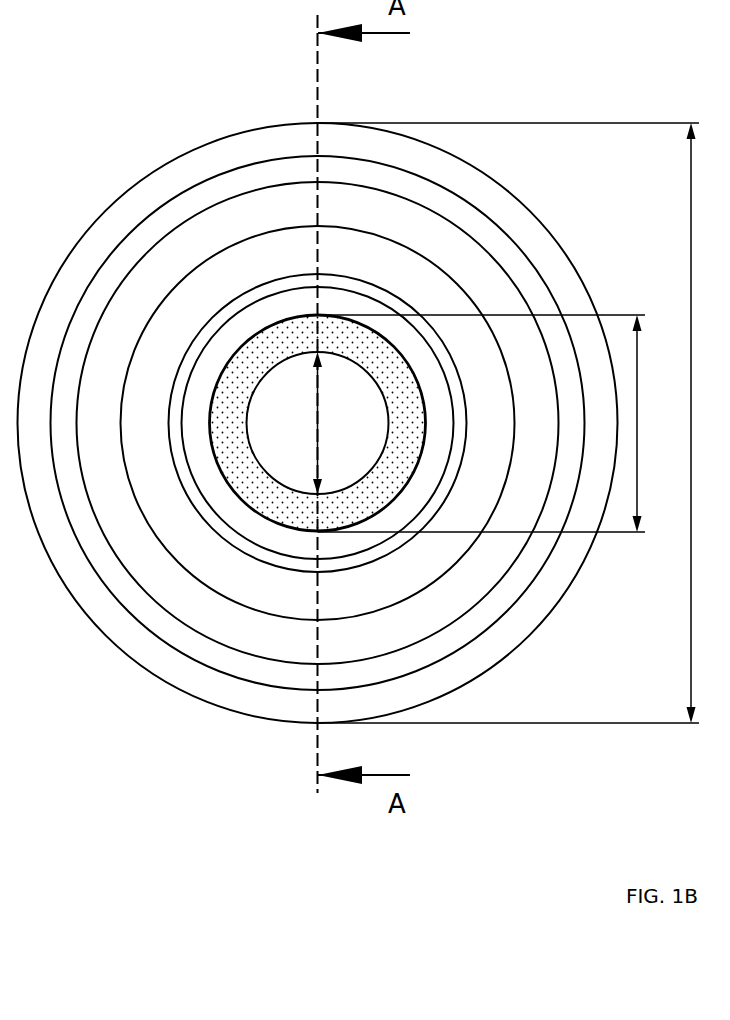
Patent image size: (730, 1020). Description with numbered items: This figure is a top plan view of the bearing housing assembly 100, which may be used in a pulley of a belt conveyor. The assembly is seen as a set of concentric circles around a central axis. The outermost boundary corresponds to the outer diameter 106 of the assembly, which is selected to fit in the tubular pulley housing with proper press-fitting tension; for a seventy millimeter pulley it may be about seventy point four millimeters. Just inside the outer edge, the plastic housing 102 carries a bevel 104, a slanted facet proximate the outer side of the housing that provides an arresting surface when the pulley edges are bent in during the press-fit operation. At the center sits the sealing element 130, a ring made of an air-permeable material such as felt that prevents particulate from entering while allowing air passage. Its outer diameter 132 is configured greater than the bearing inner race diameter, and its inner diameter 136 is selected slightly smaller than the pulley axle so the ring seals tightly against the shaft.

The bearing housing assembly 100 is at (86, 85).
The housing 102 is at (436, 210).
The bevel 104 is at (130, 623).
The outer diameter 106 is at (687, 212).
The sealing element 130 is at (299, 348).
The outer diameter of the sealing element 132 is at (638, 418).
The inner diameter of the sealing element 136 is at (323, 460).